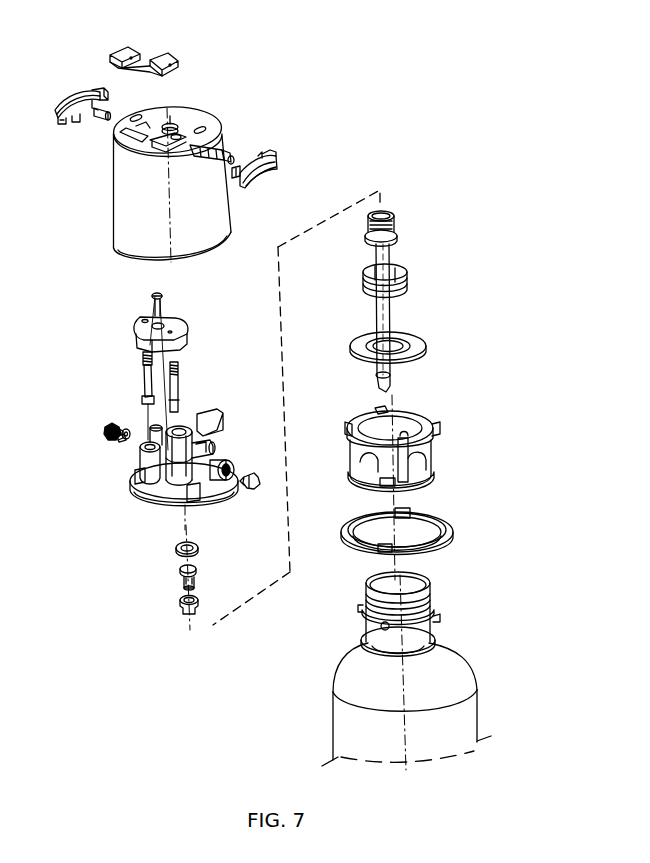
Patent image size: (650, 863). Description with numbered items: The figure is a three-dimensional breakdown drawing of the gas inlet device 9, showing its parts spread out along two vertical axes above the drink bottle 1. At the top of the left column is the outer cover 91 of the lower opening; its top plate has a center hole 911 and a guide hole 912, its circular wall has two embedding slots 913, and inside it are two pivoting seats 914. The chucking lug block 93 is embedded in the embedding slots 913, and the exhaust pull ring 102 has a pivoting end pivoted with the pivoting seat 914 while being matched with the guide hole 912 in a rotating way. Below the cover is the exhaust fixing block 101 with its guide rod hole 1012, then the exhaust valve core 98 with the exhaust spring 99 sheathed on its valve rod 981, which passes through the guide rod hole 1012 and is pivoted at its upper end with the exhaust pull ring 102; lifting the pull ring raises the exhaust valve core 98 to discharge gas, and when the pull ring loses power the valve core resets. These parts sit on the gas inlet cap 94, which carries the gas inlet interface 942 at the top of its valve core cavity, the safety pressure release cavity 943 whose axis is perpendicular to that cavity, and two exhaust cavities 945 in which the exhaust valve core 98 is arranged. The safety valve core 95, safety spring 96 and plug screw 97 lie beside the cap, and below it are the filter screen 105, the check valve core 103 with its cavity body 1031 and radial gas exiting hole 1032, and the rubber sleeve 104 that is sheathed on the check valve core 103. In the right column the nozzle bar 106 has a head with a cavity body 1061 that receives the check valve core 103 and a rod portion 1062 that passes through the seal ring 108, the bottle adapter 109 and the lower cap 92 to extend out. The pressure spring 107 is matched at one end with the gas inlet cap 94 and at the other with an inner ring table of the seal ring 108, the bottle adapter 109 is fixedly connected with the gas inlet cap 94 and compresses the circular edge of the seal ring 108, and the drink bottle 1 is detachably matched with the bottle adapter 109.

The drink bottle 1 is at (352, 726).
The gas inlet device 9 is at (413, 172).
The outer cover 91 is at (130, 211).
The center hole 911 is at (172, 121).
The guide hole 912 is at (180, 138).
The embedding slot 913 is at (228, 150).
The pivoting seat 914 is at (135, 118).
The lower cap 92 is at (455, 537).
The chucking lug block 93 is at (68, 96).
The gas inlet cap 94 is at (140, 491).
The gas inlet interface 942 is at (215, 414).
The safety pressure release cavity 943 is at (235, 466).
The exhaust cavity 945 is at (142, 462).
The safety valve core 95 is at (126, 426).
The safety spring 96 is at (115, 438).
The plug screw 97 is at (104, 429).
The exhaust valve core 98 is at (142, 397).
The valve rod 981 is at (143, 379).
The exhaust spring 99 is at (145, 353).
The exhaust fixing block 101 is at (140, 318).
The guide rod hole 1012 is at (140, 322).
The exhaust pull ring 102 is at (126, 53).
The check valve core 103 is at (182, 584).
The cavity body 1031 is at (196, 568).
The radial gas exiting hole 1032 is at (197, 580).
The rubber sleeve 104 is at (186, 610).
The filter screen 105 is at (175, 553).
The nozzle bar 106 is at (398, 270).
The cavity body 1061 is at (388, 213).
The rod portion 1062 is at (395, 318).
The pressure spring 107 is at (407, 296).
The seal ring 108 is at (426, 349).
The bottle adapter 109 is at (440, 456).